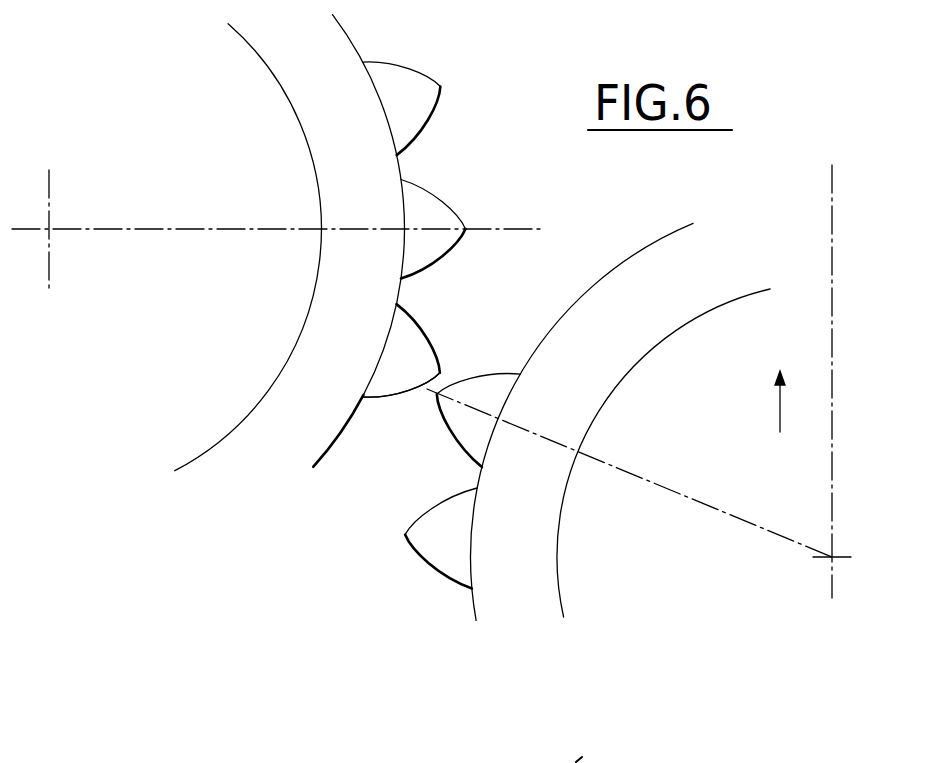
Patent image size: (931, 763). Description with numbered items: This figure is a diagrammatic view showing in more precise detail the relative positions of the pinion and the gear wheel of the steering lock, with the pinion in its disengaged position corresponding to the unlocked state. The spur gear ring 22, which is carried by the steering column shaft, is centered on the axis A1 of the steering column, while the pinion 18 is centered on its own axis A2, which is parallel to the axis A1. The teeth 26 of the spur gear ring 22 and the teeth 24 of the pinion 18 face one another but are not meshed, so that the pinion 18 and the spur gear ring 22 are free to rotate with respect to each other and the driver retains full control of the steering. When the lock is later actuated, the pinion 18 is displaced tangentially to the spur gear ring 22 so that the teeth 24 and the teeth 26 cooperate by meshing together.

The pinion 18 is at (622, 254).
The spur gear ring 22 is at (466, 164).
The teeth of the pinion 24 is at (481, 400).
The teeth of the spur gear ring 26 is at (423, 367).
The axis of the steering column A1 is at (51, 229).
The axis of the pinion A2 is at (832, 558).